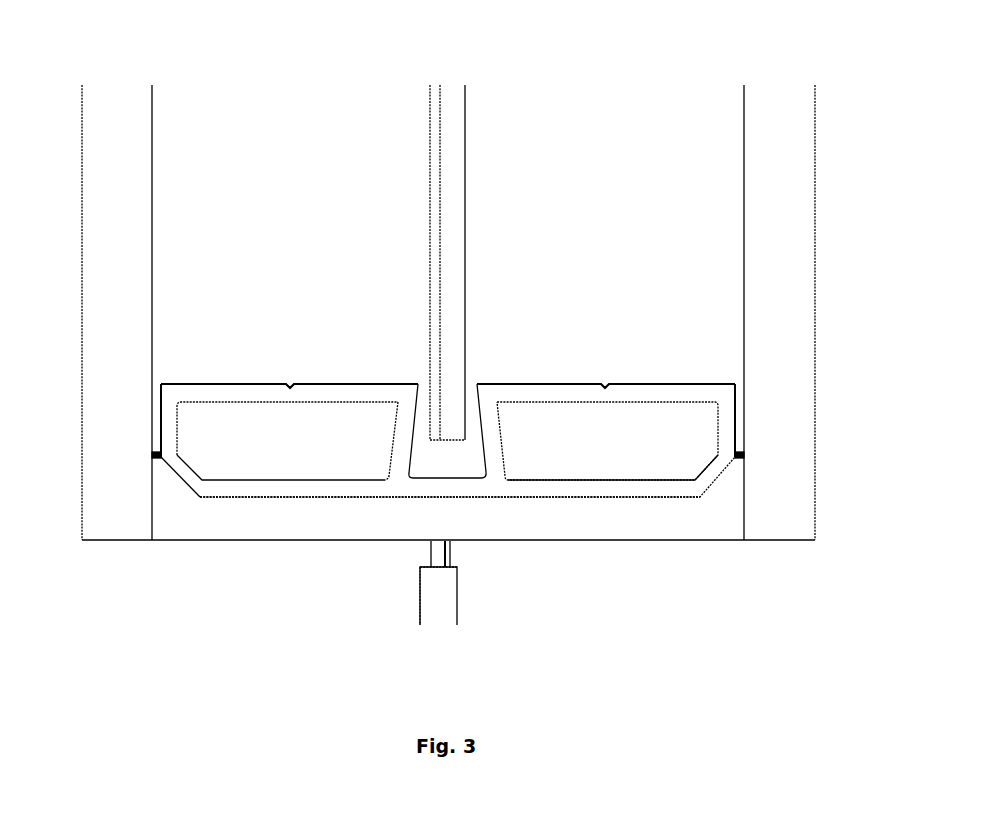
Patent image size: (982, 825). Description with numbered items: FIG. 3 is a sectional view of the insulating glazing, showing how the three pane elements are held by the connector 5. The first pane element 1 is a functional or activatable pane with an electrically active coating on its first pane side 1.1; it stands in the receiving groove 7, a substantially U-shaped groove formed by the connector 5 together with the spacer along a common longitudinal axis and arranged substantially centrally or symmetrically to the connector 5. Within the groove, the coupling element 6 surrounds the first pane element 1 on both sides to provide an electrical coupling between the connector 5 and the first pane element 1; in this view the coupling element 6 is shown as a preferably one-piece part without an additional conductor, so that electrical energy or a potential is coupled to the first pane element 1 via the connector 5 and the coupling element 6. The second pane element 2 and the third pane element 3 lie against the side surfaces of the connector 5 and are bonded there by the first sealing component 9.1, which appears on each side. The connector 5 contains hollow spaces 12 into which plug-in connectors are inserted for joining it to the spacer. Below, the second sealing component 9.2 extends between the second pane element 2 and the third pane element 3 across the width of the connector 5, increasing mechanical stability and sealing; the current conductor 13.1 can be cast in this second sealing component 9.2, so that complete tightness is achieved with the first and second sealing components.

The first pane element 1 is at (447, 232).
The first pane side 1.1 is at (430, 178).
The second pane element 2 is at (117, 195).
The third pane element 3 is at (755, 200).
The connector 5 is at (690, 387).
The coupling element 6 is at (463, 464).
The receiving groove 7 is at (485, 476).
The first sealing component 9.1 is at (152, 438).
The second sealing component 9.2 is at (602, 523).
The hollow space 12 is at (225, 455).
The current conductor 13.1 is at (443, 590).